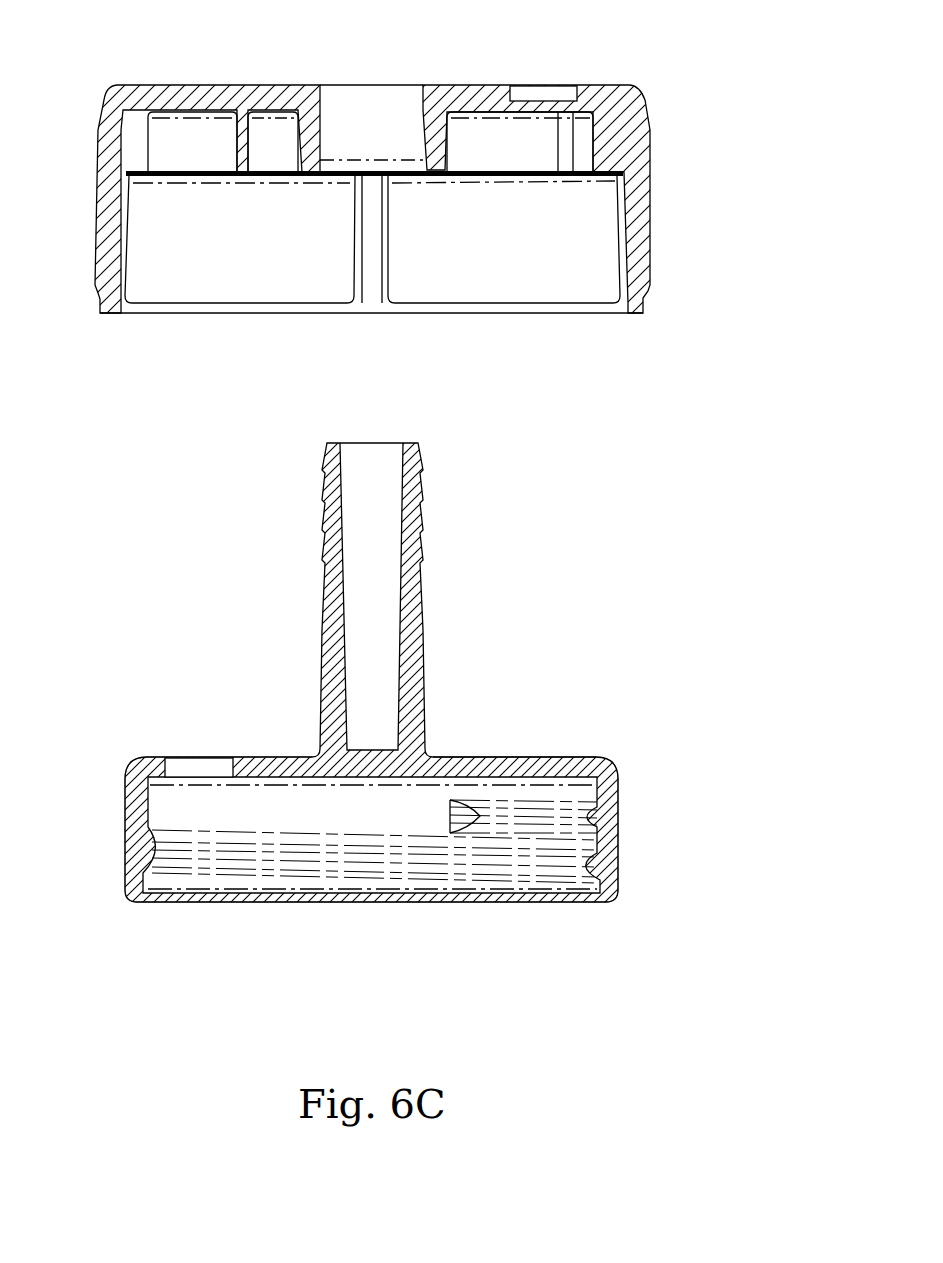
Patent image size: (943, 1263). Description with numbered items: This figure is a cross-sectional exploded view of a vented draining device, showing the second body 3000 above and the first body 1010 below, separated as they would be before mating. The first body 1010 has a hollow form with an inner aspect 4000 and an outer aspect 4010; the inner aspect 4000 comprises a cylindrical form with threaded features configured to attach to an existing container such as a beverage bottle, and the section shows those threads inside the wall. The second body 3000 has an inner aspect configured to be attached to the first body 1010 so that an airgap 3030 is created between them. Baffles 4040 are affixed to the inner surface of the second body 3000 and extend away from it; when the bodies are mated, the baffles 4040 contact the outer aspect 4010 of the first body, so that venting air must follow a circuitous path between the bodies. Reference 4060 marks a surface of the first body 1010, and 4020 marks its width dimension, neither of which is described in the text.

The second body 3000 is at (710, 177).
The airgap 3030 is at (196, 160).
The baffles 4040 is at (244, 146).
The first body 1010 is at (654, 744).
The outer aspect 4010 is at (204, 684).
The inner aspect 4000 is at (256, 810).
The top surface 4060 is at (528, 754).
The width dimension 4020 is at (146, 903).